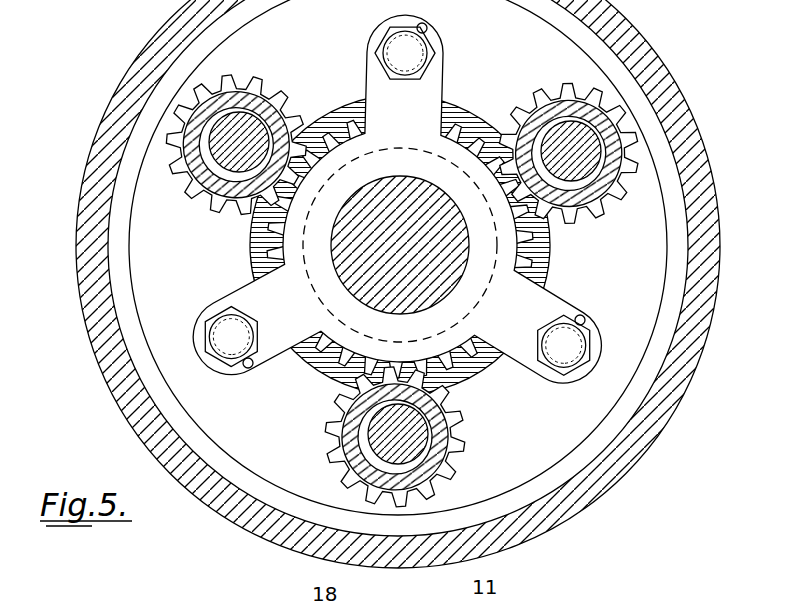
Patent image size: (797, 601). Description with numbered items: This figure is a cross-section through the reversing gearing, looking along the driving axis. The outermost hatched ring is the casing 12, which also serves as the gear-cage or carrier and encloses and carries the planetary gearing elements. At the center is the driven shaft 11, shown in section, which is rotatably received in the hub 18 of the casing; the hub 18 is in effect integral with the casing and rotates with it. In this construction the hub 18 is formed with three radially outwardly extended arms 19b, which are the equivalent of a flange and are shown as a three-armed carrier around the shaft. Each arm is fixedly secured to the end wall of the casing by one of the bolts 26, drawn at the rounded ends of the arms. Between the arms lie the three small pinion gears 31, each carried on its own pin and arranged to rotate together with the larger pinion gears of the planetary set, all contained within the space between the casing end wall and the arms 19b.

The driven shaft 11 is at (447, 280).
The casing 12 is at (755, 383).
The hub 18 is at (577, 143).
The radially outwardly extended arms 19b is at (583, 285).
The bolts 26 is at (410, 52).
The small pinion gears 31 is at (611, 196).